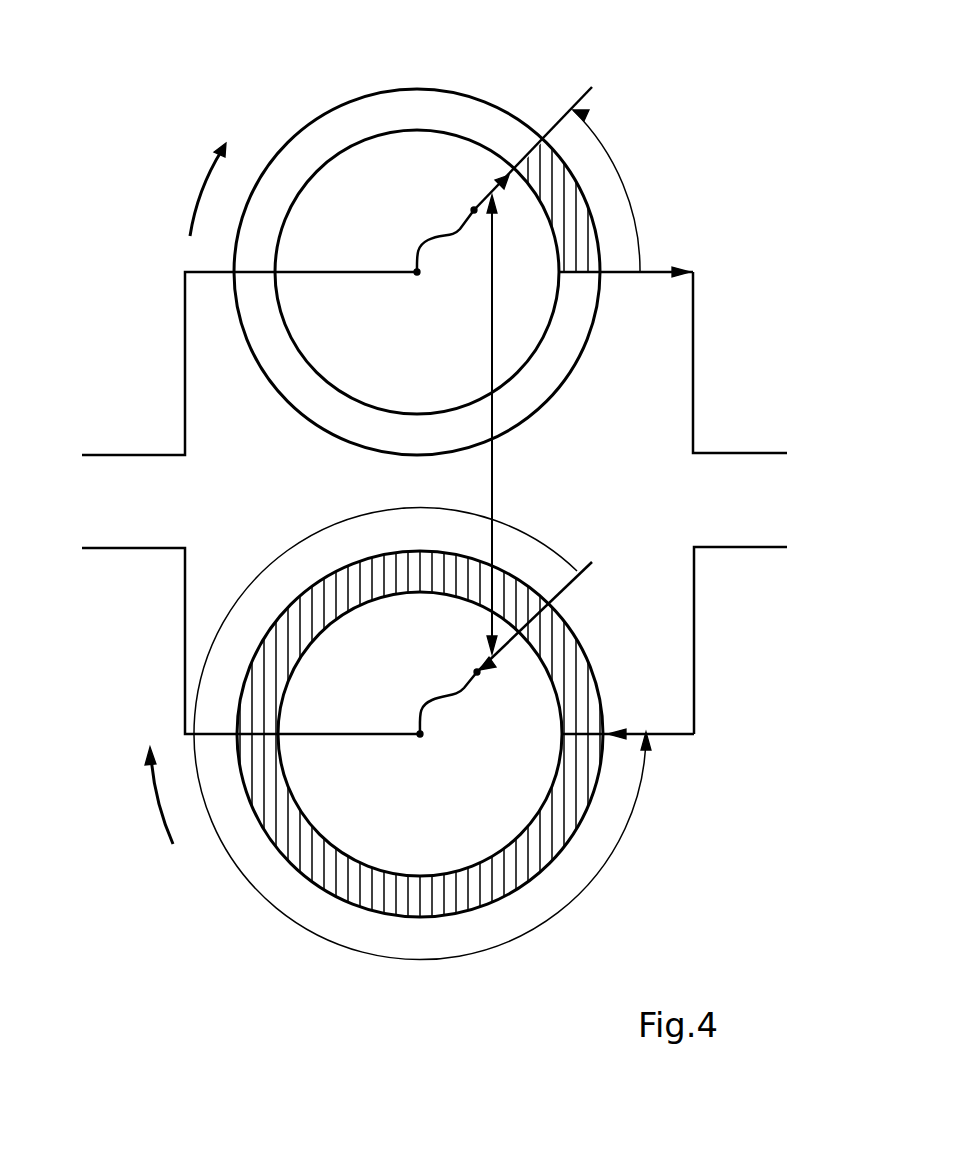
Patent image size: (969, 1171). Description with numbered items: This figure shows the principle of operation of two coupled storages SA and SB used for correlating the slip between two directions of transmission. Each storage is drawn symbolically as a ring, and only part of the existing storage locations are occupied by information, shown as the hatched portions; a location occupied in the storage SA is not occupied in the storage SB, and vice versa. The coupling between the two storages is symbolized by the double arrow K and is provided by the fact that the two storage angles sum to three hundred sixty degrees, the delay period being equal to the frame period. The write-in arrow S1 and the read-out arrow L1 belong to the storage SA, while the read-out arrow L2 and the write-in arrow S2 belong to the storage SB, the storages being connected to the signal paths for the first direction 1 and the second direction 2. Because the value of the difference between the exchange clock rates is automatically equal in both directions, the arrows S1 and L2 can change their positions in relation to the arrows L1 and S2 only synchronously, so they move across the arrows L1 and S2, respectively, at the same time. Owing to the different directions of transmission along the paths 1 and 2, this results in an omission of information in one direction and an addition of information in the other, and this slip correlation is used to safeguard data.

The storage SA is at (370, 87).
The storage SB is at (567, 850).
The write-in arrow S1 is at (490, 193).
The write-in arrow S2 is at (640, 733).
The read-out arrow L1 is at (660, 275).
The read-out arrow L2 is at (510, 641).
The coupling K is at (547, 424).
The transmission direction 1 is at (146, 445).
The transmission direction 2 is at (150, 557).